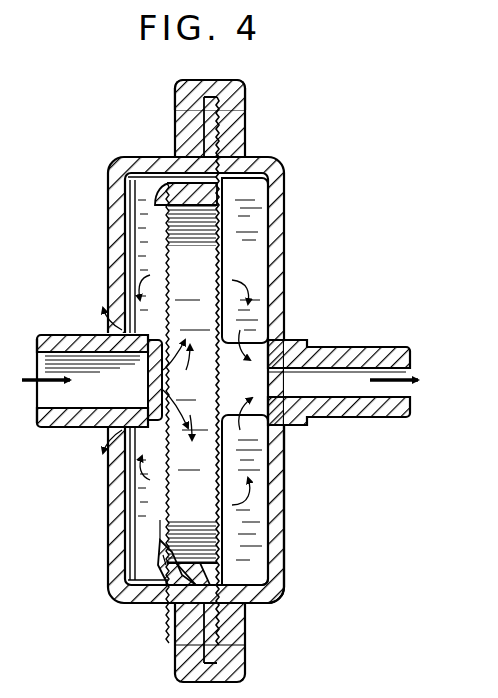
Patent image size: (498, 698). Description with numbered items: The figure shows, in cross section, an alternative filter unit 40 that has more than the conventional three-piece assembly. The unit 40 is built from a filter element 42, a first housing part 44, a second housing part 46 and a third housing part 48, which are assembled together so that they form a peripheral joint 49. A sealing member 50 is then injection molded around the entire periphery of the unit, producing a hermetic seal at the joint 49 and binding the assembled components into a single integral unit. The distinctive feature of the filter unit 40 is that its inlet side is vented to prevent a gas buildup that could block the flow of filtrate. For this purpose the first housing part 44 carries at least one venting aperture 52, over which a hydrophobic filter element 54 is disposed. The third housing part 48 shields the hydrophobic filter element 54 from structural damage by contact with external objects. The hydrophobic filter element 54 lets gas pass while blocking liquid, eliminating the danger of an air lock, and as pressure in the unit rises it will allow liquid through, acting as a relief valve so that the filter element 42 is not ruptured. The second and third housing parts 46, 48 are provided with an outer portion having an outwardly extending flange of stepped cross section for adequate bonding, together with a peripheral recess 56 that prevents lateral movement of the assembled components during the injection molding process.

The filter unit 40 is at (296, 189).
The filter element 42 is at (222, 248).
The first housing part 44 is at (157, 293).
The second housing part 46 is at (286, 492).
The third housing part 48 is at (126, 203).
The peripheral joint 49 is at (244, 95).
The sealing member 50 is at (177, 84).
The venting aperture 52 is at (166, 550).
The hydrophobic filter element 54 is at (165, 528).
The peripheral recess 56 is at (243, 140).